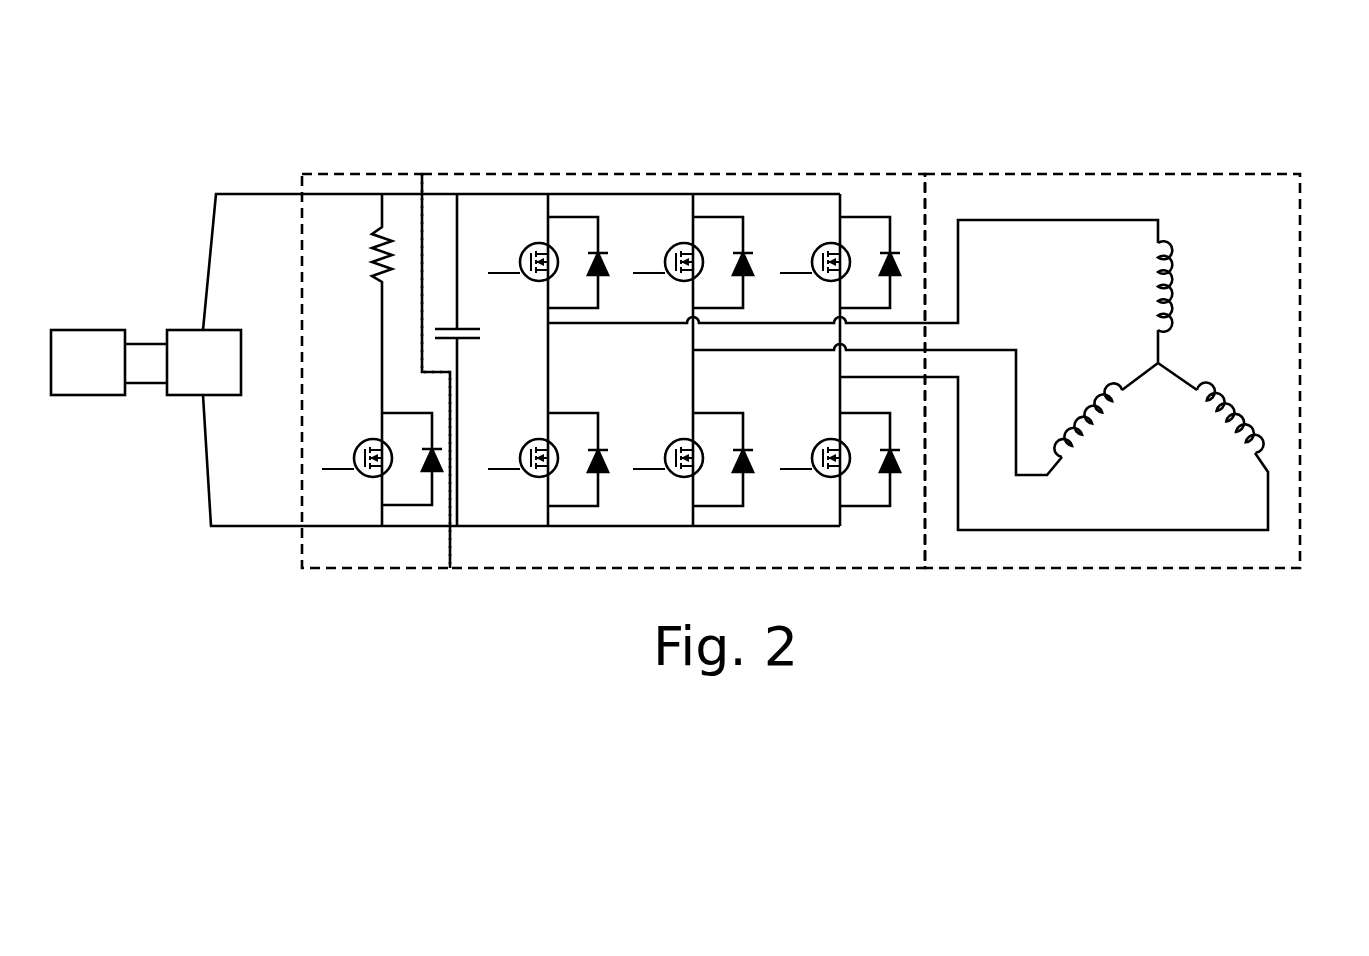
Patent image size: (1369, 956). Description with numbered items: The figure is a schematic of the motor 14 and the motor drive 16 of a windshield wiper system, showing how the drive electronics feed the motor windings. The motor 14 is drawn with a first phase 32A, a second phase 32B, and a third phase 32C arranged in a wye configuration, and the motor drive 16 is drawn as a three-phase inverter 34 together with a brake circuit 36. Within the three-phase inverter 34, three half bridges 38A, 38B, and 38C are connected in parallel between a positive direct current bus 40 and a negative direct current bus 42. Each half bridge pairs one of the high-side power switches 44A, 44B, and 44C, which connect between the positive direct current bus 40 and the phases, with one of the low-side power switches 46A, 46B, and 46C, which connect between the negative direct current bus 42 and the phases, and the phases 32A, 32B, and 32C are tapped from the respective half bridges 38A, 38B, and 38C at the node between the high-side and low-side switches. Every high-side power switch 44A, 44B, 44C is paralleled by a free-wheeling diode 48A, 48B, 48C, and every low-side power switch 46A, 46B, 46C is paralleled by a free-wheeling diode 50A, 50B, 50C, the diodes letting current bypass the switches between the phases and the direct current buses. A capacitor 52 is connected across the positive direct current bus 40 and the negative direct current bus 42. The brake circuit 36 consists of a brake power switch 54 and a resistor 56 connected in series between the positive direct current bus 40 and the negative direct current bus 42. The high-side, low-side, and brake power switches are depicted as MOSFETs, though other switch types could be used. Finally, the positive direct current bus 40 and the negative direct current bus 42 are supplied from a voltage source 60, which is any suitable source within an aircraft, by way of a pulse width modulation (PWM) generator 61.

The motor 14 is at (1293, 175).
The motor drive 16 is at (224, 144).
The first phase 32A is at (1173, 282).
The second phase 32B is at (1087, 412).
The third phase 32C is at (1230, 410).
The three-phase inverter 34 is at (678, 173).
The brake circuit 36 is at (377, 173).
The half bridge 38A is at (604, 184).
The half bridge 38B is at (739, 184).
The half bridge 38C is at (859, 189).
The positive direct current bus 40 is at (268, 195).
The negative direct current bus 42 is at (258, 526).
The high-side power switch 44A is at (520, 251).
The high-side power switch 44B is at (666, 251).
The high-side power switch 44C is at (815, 251).
The low-side power switch 46A is at (522, 442).
The low-side power switch 46B is at (665, 438).
The low-side power switch 46C is at (812, 442).
The free-wheeling diode 48A is at (609, 266).
The free-wheeling diode 48B is at (754, 266).
The free-wheeling diode 48C is at (930, 262).
The free-wheeling diode 50A is at (609, 465).
The free-wheeling diode 50B is at (754, 465).
The free-wheeling diode 50C is at (882, 475).
The capacitor 52 is at (480, 338).
The brake power switch 54 is at (362, 442).
The resistor 56 is at (370, 262).
The voltage source 60 is at (88, 362).
The pulse width modulation (PWM) generator 61 is at (204, 363).